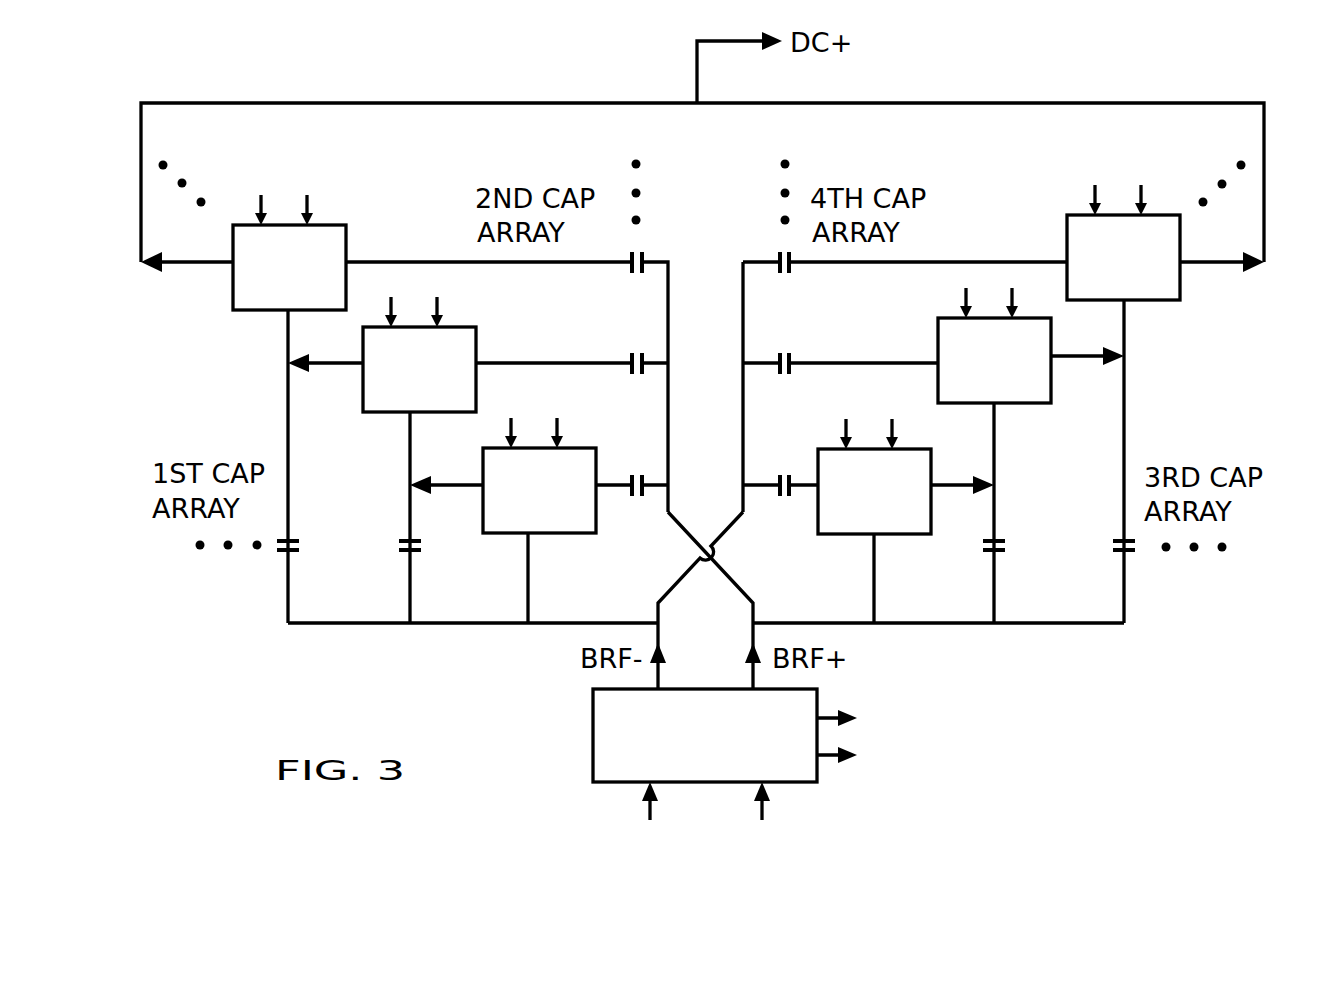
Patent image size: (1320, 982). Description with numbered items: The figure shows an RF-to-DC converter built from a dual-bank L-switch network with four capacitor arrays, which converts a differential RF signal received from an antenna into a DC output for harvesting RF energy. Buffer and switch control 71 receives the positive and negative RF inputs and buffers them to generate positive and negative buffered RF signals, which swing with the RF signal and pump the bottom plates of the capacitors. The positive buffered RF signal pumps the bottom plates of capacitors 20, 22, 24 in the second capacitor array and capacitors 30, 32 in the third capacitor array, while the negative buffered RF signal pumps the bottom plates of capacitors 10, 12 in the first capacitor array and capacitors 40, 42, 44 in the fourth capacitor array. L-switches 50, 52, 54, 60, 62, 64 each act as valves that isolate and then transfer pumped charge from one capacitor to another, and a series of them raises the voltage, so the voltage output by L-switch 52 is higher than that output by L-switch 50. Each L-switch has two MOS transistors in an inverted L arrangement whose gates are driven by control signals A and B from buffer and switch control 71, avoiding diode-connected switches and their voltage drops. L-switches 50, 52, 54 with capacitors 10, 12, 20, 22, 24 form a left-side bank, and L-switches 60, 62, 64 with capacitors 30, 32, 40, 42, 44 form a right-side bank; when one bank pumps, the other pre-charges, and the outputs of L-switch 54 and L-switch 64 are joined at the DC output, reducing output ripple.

The capacitor 10 is at (420, 552).
The capacitor 12 is at (298, 552).
The capacitor 20 is at (632, 497).
The capacitor 22 is at (632, 375).
The capacitor 24 is at (632, 274).
The capacitor 30 is at (1004, 552).
The capacitor 32 is at (1134, 552).
The capacitor 40 is at (780, 497).
The capacitor 42 is at (780, 375).
The capacitor 44 is at (780, 274).
The L-switch 50 is at (582, 518).
The L-switch 52 is at (462, 397).
The L-switch 54 is at (332, 295).
The L-switch 60 is at (917, 519).
The L-switch 62 is at (1037, 388).
The L-switch 64 is at (1166, 285).
The buffer and switch control 71 is at (806, 727).